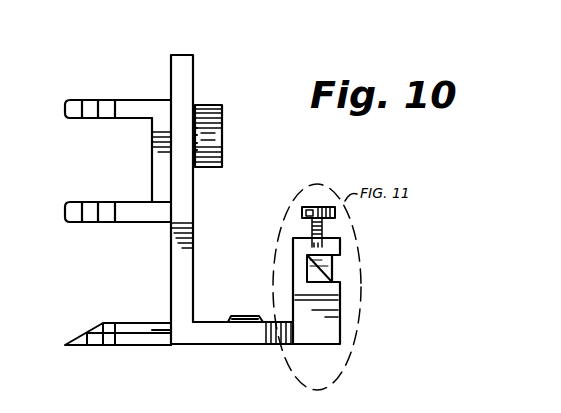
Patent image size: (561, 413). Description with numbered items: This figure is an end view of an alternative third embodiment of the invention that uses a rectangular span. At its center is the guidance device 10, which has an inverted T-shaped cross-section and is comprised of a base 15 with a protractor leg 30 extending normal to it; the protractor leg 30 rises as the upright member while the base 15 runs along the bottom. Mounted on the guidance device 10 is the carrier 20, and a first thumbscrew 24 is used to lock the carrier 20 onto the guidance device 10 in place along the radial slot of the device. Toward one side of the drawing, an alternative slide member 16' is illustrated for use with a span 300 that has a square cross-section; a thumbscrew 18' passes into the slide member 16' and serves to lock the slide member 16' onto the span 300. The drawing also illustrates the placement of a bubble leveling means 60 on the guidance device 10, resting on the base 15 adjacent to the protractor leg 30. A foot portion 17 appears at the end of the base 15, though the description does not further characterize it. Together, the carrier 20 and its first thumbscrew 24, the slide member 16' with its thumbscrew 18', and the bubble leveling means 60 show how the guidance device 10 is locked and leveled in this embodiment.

The guidance device 10 is at (208, 22).
The carrier 20 is at (138, 70).
The protractor leg 30 is at (178, 276).
The first thumbscrew 24 is at (222, 127).
The wedge foot 17 is at (97, 335).
The base 15 is at (204, 336).
The bubble leveling means 60 is at (247, 315).
The slide member 16' is at (356, 291).
The span 300 is at (335, 275).
The thumbscrew 18' is at (325, 199).